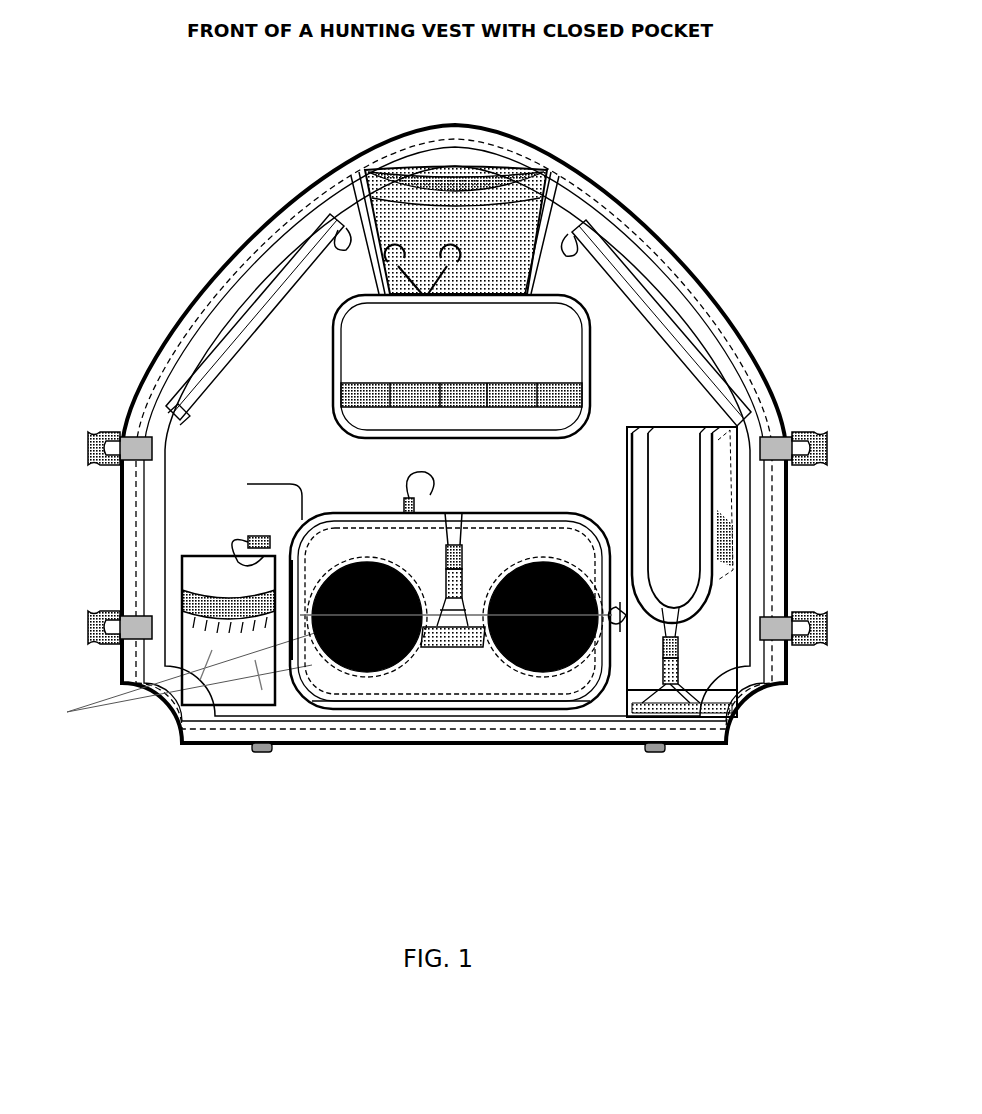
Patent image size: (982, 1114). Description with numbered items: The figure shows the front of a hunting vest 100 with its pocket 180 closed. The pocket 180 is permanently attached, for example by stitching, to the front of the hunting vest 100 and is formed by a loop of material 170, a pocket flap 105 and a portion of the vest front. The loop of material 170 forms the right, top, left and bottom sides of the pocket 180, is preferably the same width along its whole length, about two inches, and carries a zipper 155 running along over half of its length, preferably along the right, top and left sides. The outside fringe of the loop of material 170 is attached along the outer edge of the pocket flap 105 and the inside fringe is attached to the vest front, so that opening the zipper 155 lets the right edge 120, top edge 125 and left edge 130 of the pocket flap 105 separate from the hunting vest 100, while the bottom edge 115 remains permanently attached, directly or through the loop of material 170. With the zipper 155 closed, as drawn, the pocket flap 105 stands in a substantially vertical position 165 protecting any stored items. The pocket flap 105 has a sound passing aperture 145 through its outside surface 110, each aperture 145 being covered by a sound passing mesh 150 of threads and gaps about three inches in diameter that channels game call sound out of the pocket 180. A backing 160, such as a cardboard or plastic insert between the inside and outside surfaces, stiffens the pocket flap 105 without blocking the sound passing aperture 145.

The hunting vest 100 is at (215, 200).
The pocket flap 105 is at (467, 595).
The outside surface 110 is at (482, 692).
The bottom edge 115 is at (360, 707).
The right edge 120 is at (293, 617).
The top edge 125 is at (340, 508).
The left edge 130 is at (621, 615).
The sound passing aperture 145 is at (357, 593).
The sound passing mesh 150 is at (367, 622).
The zipper 155 is at (410, 514).
The backing 160 is at (490, 553).
The substantially vertical position 165 is at (247, 590).
The loop of material 170 is at (607, 521).
The pocket 180 is at (435, 688).